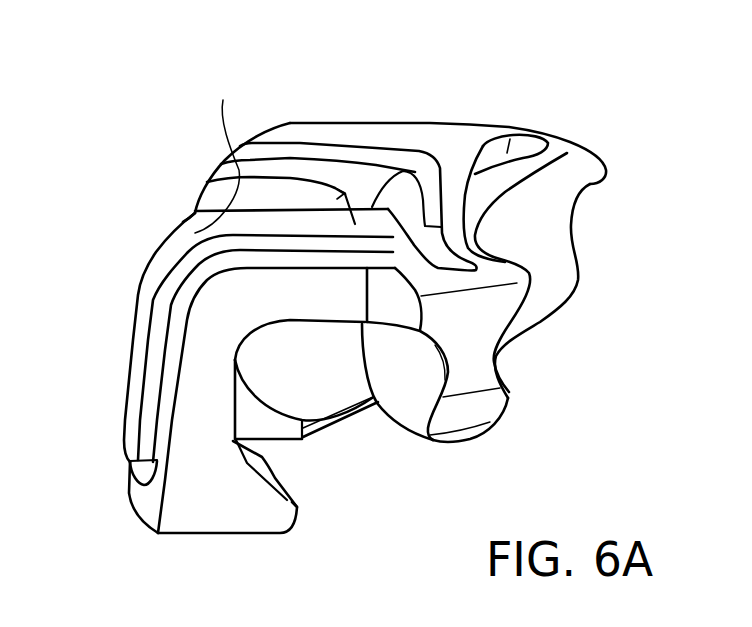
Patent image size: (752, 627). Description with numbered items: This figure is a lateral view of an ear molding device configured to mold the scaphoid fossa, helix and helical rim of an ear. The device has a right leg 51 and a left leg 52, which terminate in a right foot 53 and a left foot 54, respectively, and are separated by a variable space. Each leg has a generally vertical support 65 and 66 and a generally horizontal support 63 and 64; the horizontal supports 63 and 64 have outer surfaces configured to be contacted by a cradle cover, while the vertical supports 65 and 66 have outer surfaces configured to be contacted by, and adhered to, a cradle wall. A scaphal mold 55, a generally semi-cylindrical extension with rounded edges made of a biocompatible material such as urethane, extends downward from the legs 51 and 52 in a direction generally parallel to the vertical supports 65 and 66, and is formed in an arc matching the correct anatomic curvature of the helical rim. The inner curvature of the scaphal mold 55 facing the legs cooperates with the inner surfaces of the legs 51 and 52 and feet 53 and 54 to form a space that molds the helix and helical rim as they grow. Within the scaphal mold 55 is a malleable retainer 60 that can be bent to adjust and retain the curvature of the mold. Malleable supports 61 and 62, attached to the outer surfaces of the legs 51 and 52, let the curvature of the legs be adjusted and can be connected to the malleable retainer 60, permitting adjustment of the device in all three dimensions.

The right leg 51 is at (297, 368).
The left leg 52 is at (157, 385).
The right foot 53 is at (318, 430).
The left foot 54 is at (224, 533).
The scaphal mold 55 is at (480, 403).
The malleable retainer 60 is at (434, 197).
The malleable support 61 is at (350, 121).
The malleable support 62 is at (153, 246).
The horizontal support 63 is at (265, 133).
The horizontal support 64 is at (343, 193).
The vertical support 65 is at (195, 215).
The vertical support 66 is at (128, 490).